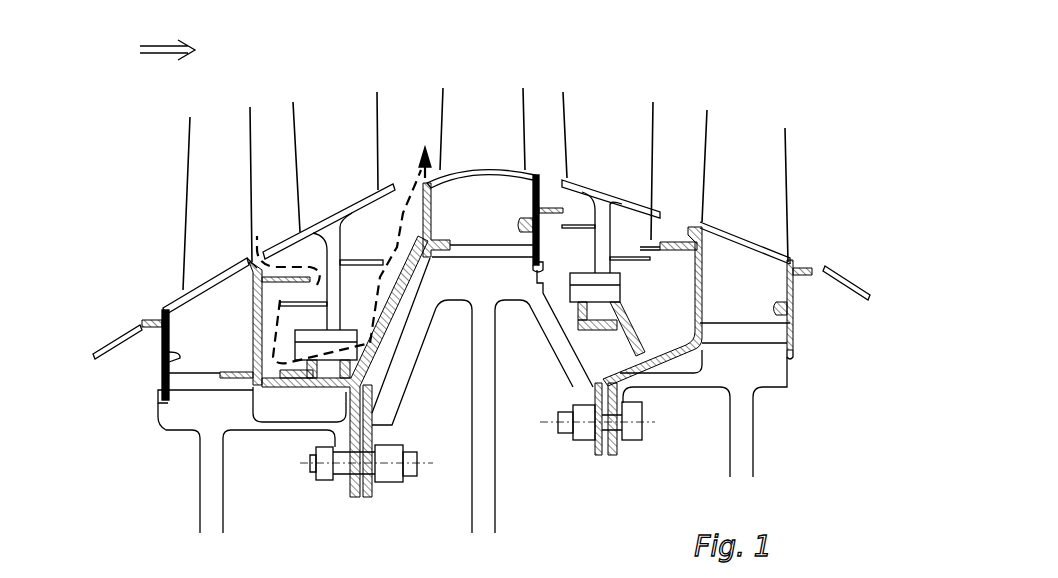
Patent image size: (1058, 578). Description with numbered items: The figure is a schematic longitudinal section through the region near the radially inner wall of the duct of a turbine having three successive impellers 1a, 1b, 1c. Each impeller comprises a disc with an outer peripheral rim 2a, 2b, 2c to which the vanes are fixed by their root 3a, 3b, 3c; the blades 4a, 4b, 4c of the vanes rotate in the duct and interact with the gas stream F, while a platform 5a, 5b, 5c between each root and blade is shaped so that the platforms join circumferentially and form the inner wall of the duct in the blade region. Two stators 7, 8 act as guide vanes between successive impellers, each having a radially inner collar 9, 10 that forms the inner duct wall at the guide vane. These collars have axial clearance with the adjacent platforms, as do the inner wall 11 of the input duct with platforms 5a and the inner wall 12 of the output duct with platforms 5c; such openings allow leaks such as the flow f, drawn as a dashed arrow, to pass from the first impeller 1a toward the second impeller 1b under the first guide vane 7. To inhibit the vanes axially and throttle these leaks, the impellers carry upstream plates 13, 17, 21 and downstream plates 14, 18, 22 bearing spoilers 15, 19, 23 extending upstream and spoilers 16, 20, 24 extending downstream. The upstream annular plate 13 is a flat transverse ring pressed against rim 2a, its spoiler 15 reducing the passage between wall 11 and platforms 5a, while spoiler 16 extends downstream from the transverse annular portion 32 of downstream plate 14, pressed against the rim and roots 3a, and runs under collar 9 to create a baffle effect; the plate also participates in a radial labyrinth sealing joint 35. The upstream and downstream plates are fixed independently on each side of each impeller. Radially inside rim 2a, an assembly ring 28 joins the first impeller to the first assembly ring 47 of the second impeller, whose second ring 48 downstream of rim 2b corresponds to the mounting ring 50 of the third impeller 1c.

The first impeller 1a is at (160, 175).
The second impeller 1b is at (433, 86).
The third impeller 1c is at (820, 137).
The outer peripheral rim 2a is at (188, 413).
The outer peripheral rim 2b is at (458, 280).
The outer peripheral rim 2c is at (780, 385).
The root 3a is at (189, 275).
The root 3b is at (450, 202).
The root 3c is at (753, 278).
The blade 4a is at (200, 148).
The blade 4b is at (475, 103).
The blade 4c is at (747, 150).
The platform 5a is at (213, 283).
The platform 5b is at (490, 177).
The platform 5c is at (722, 212).
The first stator 7 is at (312, 95).
The second stator 8 is at (598, 113).
The radially inner collar 9 is at (297, 260).
The radially inner collar 10 is at (607, 187).
The inner wall of the input duct 11 is at (105, 340).
The inner wall of the output duct 12 is at (847, 278).
The upstream annular plate 13 is at (155, 362).
The downstream annular plate 14 is at (272, 406).
The annular spoiler 15 is at (143, 320).
The annular spoiler 16 is at (262, 268).
The upstream plate 17 is at (400, 332).
The downstream plate 18 is at (532, 250).
The spoiler 19 is at (413, 200).
The spoiler 20 is at (557, 207).
The upstream plate 21 is at (684, 357).
The downstream plate 22 is at (800, 313).
The spoiler 23 is at (678, 238).
The spoiler 24 is at (805, 270).
The assembly ring 28 is at (341, 497).
The transverse annular portion 32 is at (262, 400).
The radial labyrinth sealing joint 35 is at (327, 392).
The first assembly ring 47 is at (380, 495).
The second ring 48 is at (596, 453).
The mounting ring 50 is at (620, 450).
The leak flow f is at (308, 188).
The gas stream F is at (167, 42).